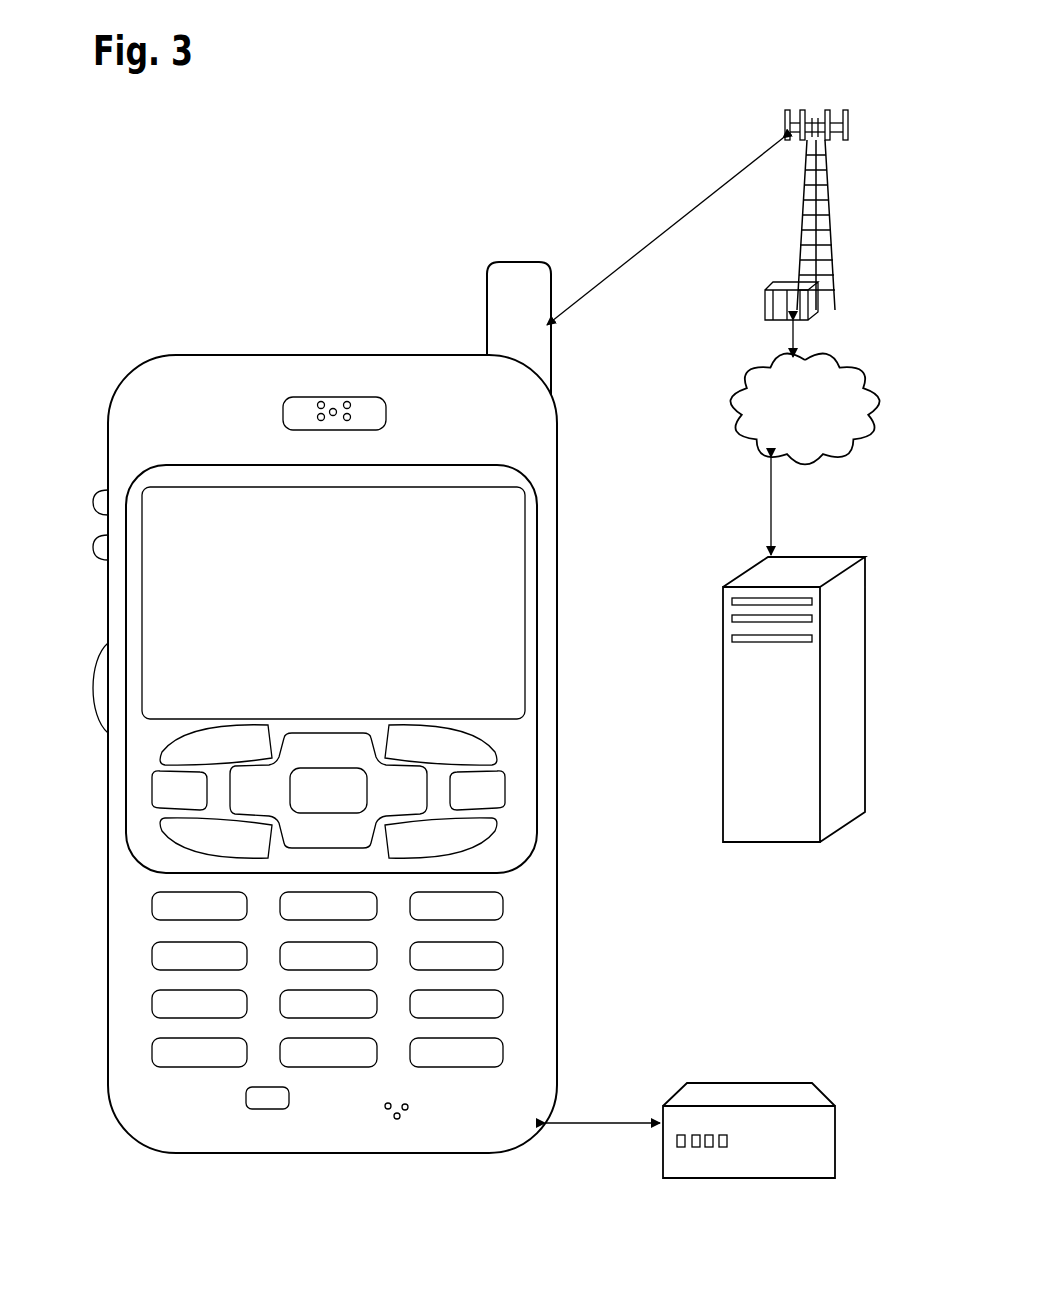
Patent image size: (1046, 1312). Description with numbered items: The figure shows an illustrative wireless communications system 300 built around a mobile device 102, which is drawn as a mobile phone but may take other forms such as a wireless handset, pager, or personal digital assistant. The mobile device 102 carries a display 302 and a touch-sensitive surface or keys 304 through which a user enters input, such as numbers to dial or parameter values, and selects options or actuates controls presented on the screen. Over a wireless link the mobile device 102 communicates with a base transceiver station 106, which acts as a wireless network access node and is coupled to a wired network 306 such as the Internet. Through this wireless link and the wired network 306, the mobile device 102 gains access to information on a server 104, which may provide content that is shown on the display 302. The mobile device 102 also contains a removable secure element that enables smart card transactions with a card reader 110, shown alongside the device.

The wireless communications system 300 is at (475, 127).
The mobile device 102 is at (168, 1154).
The display 302 is at (520, 563).
The keys 304 is at (105, 802).
The base transceiver station 106 is at (800, 224).
The wired network 306 is at (758, 443).
The server 104 is at (748, 841).
The card reader 110 is at (718, 1180).